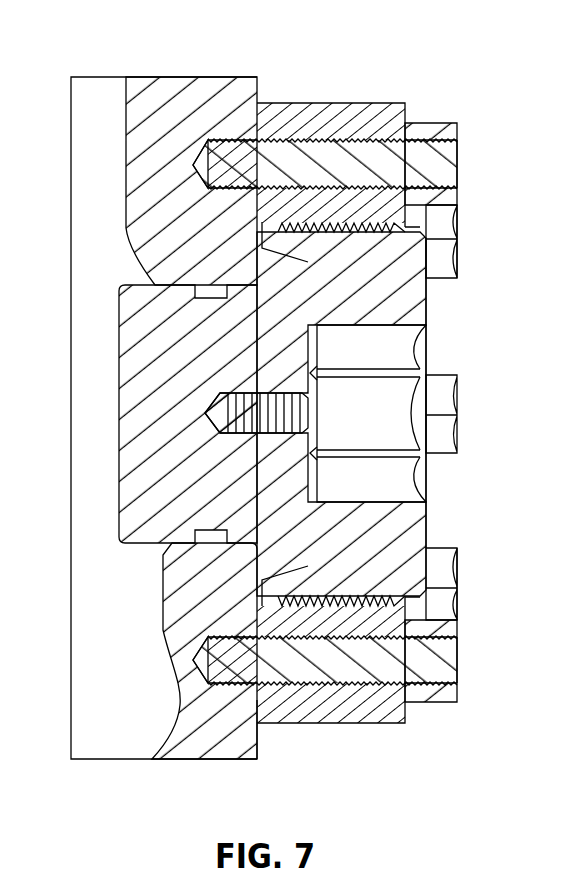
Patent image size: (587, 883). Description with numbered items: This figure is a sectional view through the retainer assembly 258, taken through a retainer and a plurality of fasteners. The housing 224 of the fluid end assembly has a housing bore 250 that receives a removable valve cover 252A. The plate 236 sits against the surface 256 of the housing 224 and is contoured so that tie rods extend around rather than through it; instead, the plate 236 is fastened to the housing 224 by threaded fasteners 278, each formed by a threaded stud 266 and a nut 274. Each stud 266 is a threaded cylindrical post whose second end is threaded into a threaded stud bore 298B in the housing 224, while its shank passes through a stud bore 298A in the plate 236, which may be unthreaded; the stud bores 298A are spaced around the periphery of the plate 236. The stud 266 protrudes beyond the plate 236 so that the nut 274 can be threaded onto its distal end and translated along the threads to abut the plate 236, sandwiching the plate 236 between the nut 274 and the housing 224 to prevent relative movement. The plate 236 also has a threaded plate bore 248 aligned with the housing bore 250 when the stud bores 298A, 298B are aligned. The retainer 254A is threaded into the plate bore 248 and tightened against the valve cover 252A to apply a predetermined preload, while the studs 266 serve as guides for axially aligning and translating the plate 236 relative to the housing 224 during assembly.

The housing 224 is at (198, 92).
The plate 236 is at (337, 720).
The plate bores 248 is at (367, 600).
The housing bores 250 is at (177, 289).
The valve cover 252A is at (140, 373).
The retainer 254A is at (410, 295).
The surface 256 is at (258, 748).
The retainer assembly 258 is at (490, 452).
The threaded stud 266 is at (370, 158).
The nut 274 is at (430, 123).
The threaded fastener 278 is at (470, 167).
The stud bore 298A is at (310, 143).
The threaded stud bore 298B is at (232, 140).